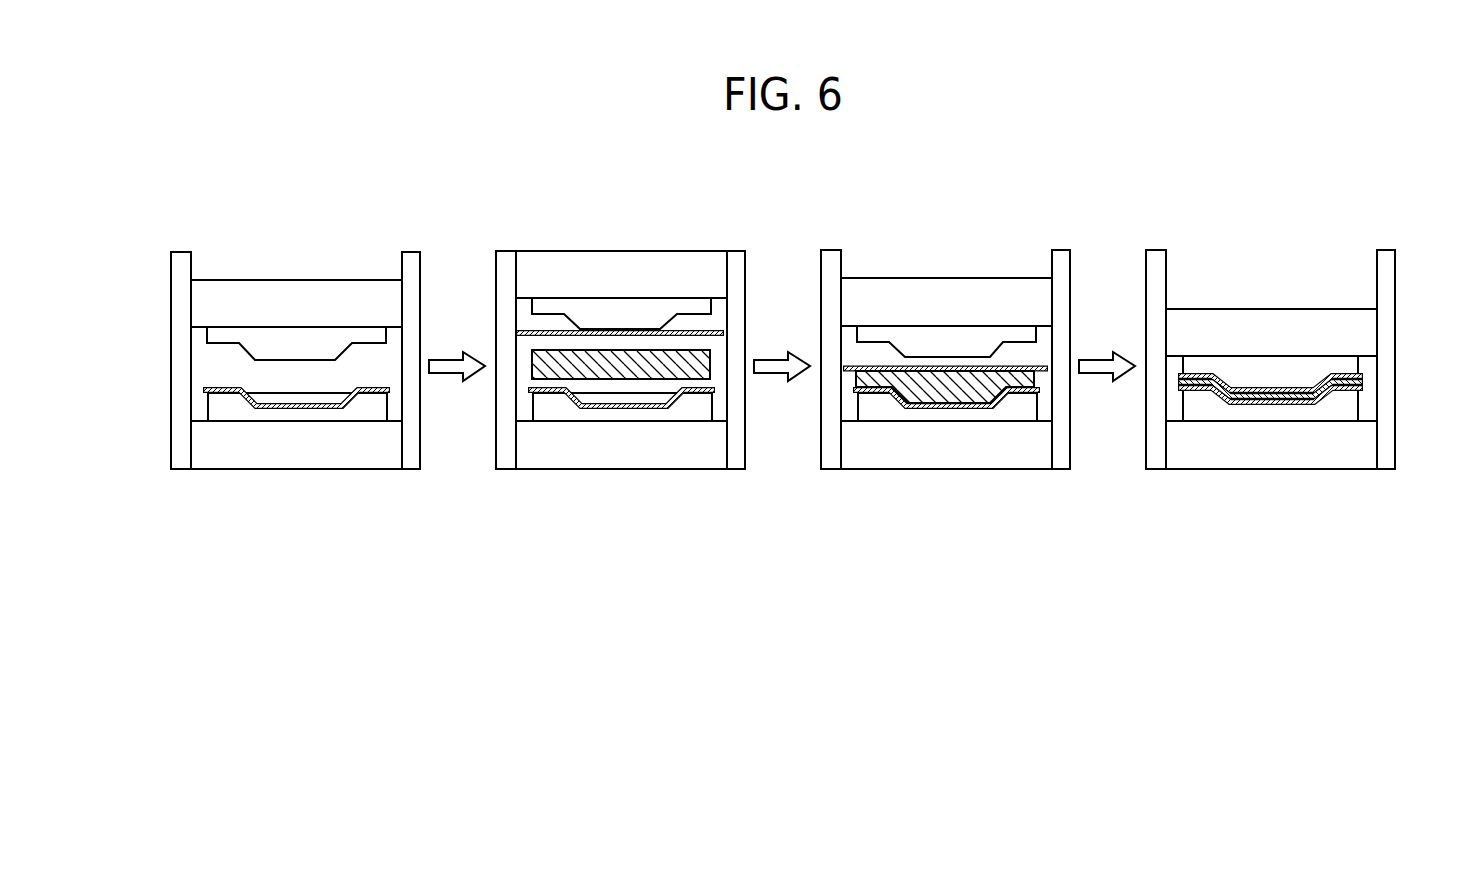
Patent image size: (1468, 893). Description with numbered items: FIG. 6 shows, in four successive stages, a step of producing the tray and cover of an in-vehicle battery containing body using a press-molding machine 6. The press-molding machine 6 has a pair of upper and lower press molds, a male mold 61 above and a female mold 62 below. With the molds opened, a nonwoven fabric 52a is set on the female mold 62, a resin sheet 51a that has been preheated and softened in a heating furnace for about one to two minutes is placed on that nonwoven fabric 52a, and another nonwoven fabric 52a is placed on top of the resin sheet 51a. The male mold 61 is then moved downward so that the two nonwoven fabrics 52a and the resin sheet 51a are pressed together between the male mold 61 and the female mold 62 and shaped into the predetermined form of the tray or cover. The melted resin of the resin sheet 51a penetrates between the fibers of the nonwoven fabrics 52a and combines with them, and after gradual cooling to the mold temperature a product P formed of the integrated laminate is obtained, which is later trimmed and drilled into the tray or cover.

The press-molding machine 6 is at (172, 455).
The male mold 61 is at (262, 340).
The female mold 62 is at (243, 415).
The nonwoven fabric 52a is at (219, 388).
The resin sheet 51a is at (662, 365).
The product P is at (1364, 385).